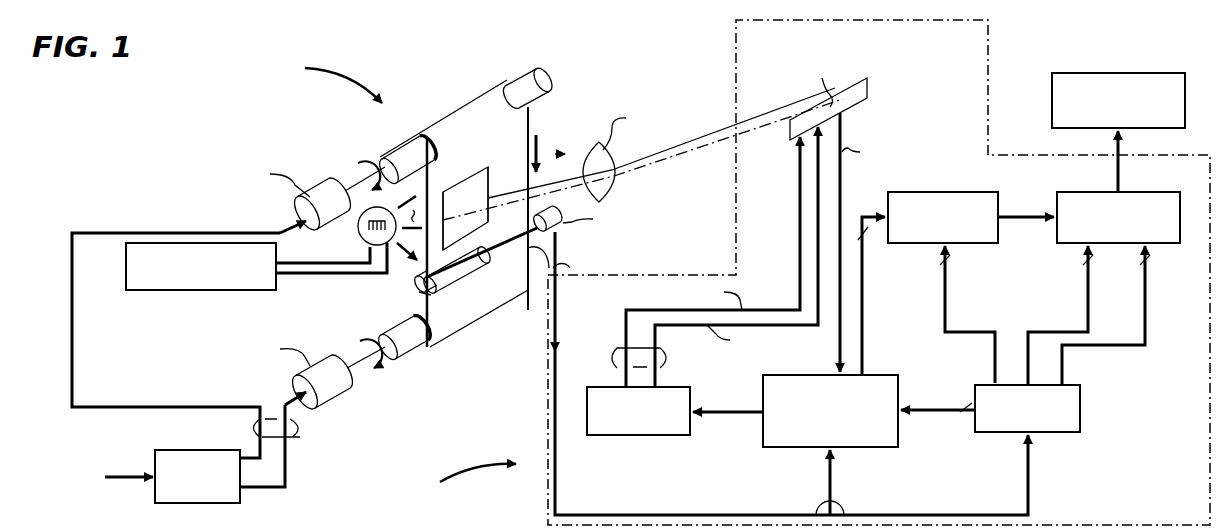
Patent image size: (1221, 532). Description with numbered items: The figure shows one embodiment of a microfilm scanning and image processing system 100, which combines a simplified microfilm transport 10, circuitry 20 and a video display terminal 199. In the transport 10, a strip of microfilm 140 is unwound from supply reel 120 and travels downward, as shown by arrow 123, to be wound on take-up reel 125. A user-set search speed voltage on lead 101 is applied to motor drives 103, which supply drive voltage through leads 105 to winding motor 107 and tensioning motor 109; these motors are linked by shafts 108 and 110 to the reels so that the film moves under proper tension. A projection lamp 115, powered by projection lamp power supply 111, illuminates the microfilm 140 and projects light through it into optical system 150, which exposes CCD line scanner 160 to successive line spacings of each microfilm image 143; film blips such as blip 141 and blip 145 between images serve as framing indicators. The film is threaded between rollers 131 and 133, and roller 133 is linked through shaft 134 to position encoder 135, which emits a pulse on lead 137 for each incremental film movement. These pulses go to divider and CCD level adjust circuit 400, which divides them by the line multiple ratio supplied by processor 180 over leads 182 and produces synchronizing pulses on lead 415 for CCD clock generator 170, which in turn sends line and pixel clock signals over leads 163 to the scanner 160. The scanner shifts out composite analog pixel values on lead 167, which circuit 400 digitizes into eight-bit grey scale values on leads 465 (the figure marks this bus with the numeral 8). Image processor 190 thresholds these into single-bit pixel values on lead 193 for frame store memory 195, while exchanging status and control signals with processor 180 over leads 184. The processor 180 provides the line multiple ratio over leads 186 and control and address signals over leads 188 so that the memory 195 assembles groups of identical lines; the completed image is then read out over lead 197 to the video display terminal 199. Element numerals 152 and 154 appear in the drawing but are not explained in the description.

The transport 10 is at (330, 81).
The circuitry 20 is at (988, 42).
The system 100 is at (460, 483).
The lead 101 is at (122, 476).
The motor drives 103 is at (200, 450).
The leads 105 is at (300, 437).
The winding motor 107 is at (293, 388).
The shaft 108 is at (355, 350).
The tensioning motor 109 is at (293, 208).
The shaft 110 is at (363, 186).
The projection lamp power supply 111 is at (126, 280).
The projection lamp 115 is at (360, 242).
The supply reel 120 is at (538, 70).
The arrow 123 is at (538, 146).
The take-up reel 125 is at (555, 270).
The roller 131 is at (417, 284).
The roller 133 is at (430, 293).
The shaft 134 is at (557, 236).
The position encoder 135 is at (548, 213).
The lead 137 is at (815, 497).
The microfilm 140 is at (470, 110).
The film blip 141 is at (438, 180).
The image 143 is at (465, 178).
The film blip 145 is at (450, 246).
The optical system 150 is at (606, 190).
The encoder drive shaft 152 is at (482, 244).
The film image frame edge 154 is at (502, 192).
The CCD line scanner 160 is at (870, 80).
The leads 163 is at (612, 352).
The lead 167 is at (842, 125).
The CCD clock generator 170 is at (680, 387).
The processor 180 is at (1075, 385).
The leads 182 is at (932, 410).
The leads 184 is at (995, 355).
The leads 186 is at (1028, 370).
The leads 188 is at (1120, 345).
The image processor 190 is at (940, 192).
The lead 193 is at (1025, 223).
The frame store memory 195 is at (1145, 192).
The lead 197 is at (1120, 136).
The video display terminal 199 is at (1140, 73).
The divider and CCD level adjust circuit 400 is at (794, 447).
The lead 415 is at (728, 414).
The leads 465 is at (864, 268).
The eight-bit bus width indicator 8 is at (858, 228).